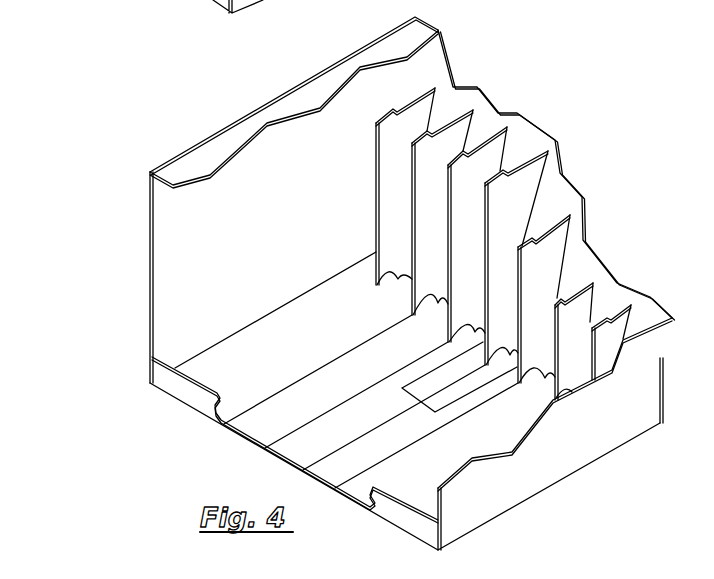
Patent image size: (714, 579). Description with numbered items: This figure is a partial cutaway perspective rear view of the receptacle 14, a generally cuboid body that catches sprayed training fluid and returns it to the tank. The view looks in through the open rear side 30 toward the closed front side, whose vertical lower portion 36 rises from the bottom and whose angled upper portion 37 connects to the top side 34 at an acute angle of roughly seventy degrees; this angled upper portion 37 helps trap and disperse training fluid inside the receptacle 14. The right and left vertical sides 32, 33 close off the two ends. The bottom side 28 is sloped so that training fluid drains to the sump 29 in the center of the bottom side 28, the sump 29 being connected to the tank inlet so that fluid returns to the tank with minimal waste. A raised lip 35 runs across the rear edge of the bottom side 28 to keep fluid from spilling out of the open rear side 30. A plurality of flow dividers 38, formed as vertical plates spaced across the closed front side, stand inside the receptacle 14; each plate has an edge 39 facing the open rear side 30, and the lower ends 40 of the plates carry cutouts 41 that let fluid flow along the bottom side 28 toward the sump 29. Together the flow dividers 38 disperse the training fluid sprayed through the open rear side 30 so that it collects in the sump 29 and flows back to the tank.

The receptacle 14 is at (170, 158).
The bottom side 28 is at (292, 440).
The sump 29 is at (435, 393).
The open rear side 30 is at (213, 275).
The right vertical side 32 is at (583, 442).
The left vertical side 33 is at (150, 212).
The top side 34 is at (223, 138).
The raised lip 35 is at (180, 387).
The vertical lower portion 36 is at (662, 393).
The angled upper portion 37 is at (430, 68).
The flow dividers 38 is at (473, 162).
The edge 39 is at (490, 200).
The lower ends 40 is at (580, 367).
The cutouts 41 is at (387, 283).